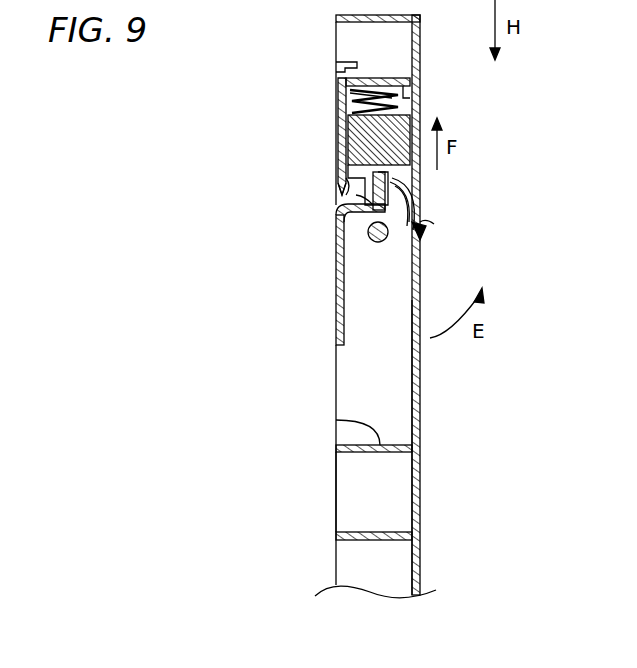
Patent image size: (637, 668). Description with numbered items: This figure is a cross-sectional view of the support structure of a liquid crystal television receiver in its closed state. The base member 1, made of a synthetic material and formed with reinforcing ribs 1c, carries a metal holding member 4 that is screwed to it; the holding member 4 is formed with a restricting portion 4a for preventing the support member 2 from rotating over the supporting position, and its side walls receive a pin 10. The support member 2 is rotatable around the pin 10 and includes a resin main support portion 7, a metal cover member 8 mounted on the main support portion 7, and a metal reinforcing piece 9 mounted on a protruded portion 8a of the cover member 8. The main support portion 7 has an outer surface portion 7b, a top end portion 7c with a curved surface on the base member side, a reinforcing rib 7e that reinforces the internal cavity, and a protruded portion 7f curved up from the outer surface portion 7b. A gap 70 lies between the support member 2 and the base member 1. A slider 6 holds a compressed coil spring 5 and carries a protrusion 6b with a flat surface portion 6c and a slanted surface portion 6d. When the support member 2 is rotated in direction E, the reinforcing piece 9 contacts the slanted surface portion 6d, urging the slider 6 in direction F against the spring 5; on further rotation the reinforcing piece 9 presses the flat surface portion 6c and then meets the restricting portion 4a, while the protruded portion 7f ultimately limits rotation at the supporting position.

The base member 1 is at (420, 40).
The reinforcing rib 1c is at (424, 94).
The support member 2 is at (421, 472).
The holding member 4 is at (340, 112).
The restricting portion 4a is at (348, 186).
The spring 5 is at (340, 88).
The slider 6 is at (420, 122).
The protrusion 6b is at (357, 170).
The flat surface portion 6c is at (344, 190).
The slanted surface portion 6d is at (360, 208).
The main support portion 7 is at (421, 368).
The outer surface portion 7b is at (421, 412).
The top end portion 7c is at (415, 190).
The reinforcing rib 7e is at (370, 437).
The protruded portion 7f is at (430, 222).
The cover member 8 is at (336, 300).
The protruded portion 8a is at (424, 238).
The reinforcing piece 9 is at (378, 172).
The pin 10 is at (368, 236).
The gap 70 is at (415, 196).